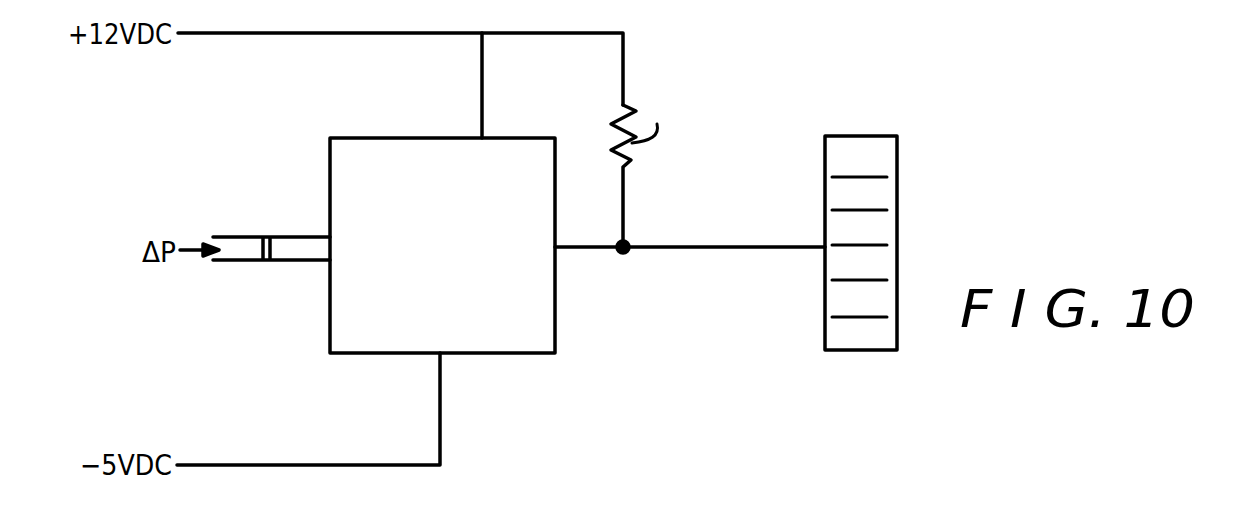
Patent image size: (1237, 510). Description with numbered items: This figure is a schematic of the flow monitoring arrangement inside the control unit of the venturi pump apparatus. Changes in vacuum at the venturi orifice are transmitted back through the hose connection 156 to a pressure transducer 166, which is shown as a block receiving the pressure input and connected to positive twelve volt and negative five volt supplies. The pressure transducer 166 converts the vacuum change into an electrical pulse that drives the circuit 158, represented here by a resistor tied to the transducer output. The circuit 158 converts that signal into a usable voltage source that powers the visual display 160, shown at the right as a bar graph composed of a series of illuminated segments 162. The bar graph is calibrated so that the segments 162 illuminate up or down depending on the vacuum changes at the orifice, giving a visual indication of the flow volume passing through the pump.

The hose connection 156 is at (246, 235).
The circuit 158 is at (651, 77).
The visual display 160 is at (864, 243).
The illuminated segments 162 is at (836, 200).
The pressure transducer 166 is at (546, 295).